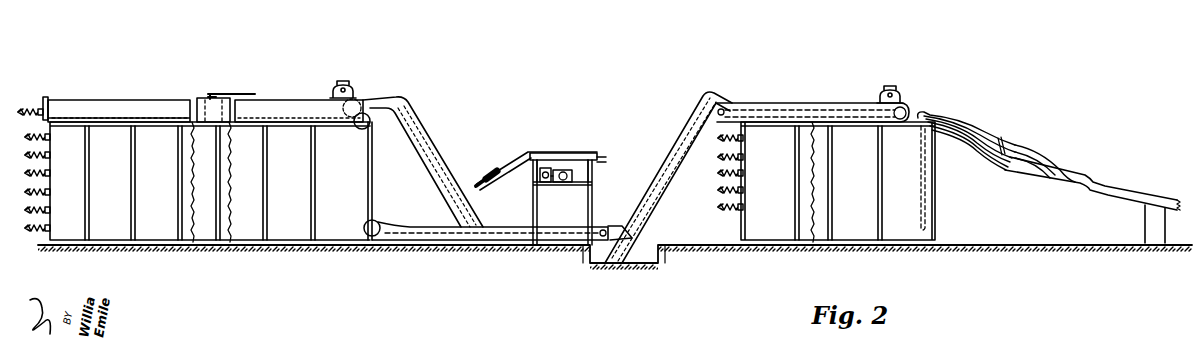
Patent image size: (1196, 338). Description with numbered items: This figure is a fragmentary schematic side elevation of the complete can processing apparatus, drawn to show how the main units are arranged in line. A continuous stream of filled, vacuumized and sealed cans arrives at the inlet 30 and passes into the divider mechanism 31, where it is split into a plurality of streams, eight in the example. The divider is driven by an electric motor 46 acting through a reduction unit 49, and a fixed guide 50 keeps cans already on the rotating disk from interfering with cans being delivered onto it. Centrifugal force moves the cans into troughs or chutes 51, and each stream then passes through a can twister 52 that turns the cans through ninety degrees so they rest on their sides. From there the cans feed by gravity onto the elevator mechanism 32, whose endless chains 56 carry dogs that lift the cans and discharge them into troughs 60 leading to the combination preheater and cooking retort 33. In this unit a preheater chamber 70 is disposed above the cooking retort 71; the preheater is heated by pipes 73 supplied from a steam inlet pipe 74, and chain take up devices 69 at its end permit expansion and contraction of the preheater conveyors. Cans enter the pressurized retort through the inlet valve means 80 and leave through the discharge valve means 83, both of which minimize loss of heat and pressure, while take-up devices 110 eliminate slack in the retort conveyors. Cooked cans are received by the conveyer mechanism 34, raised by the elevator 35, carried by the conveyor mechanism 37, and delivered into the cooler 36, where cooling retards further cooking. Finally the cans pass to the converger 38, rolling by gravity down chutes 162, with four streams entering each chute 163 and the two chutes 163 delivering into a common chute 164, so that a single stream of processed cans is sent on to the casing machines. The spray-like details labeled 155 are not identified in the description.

The inlet 30 is at (604, 160).
The divider mechanism 31 is at (581, 150).
The elevator mechanism 32 is at (440, 165).
The combination preheater and cooking retort 33 is at (156, 105).
The conveyer mechanism 34 is at (426, 227).
The elevator 35 is at (657, 210).
The cooler 36 is at (941, 200).
The conveyor mechanism 37 is at (828, 104).
The converger 38 is at (1017, 130).
The electric motor 46 is at (540, 178).
The reduction unit 49 is at (561, 182).
The fixed guide 50 is at (561, 152).
The trough or chute 51 is at (521, 151).
The can twister 52 is at (489, 170).
The endless chains 56 is at (420, 157).
The troughs 60 is at (378, 99).
The chain take up devices 69 is at (38, 96).
The preheater chamber 70 is at (186, 97).
The cooking chamber or cooking retort 71 is at (374, 152).
The pipes 73 is at (110, 118).
The steam inlet pipe 74 is at (247, 93).
The inlet valve means 80 is at (369, 118).
The discharge valve means 83 is at (378, 220).
The take-up devices 110 is at (44, 184).
The spray nozzles of second tank 155 is at (733, 189).
The chutes 162 is at (1032, 141).
The chute 163 is at (1107, 190).
The common chute 164 is at (1172, 205).